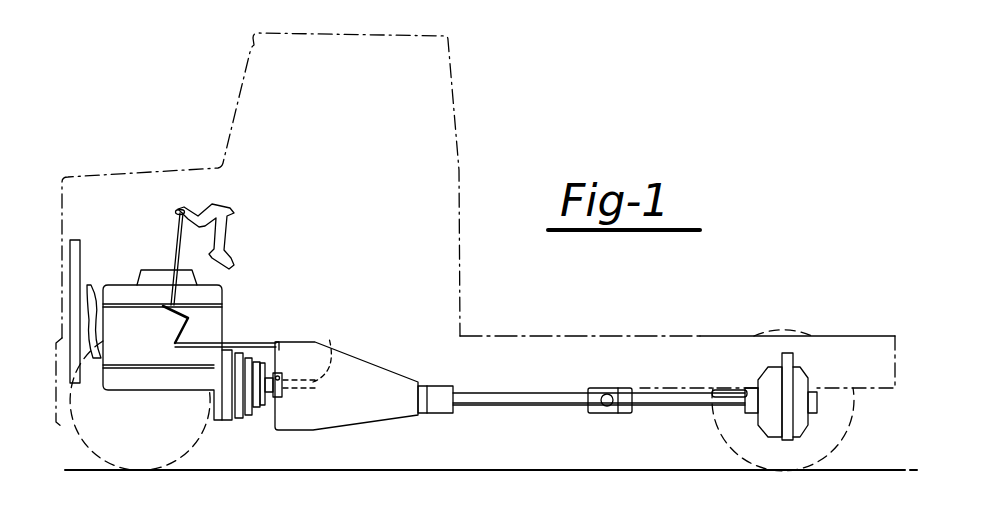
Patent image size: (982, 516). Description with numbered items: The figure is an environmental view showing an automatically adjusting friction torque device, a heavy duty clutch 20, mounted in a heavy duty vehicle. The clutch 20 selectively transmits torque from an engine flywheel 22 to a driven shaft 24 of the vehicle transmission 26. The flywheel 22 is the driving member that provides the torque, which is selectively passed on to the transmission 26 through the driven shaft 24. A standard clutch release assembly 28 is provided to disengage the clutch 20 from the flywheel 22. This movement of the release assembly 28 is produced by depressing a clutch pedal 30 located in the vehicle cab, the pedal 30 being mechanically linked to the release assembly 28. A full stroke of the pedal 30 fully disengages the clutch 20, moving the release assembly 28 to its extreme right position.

The heavy duty clutch 20 is at (244, 424).
The engine flywheel 22 is at (228, 342).
The driven shaft 24 is at (330, 342).
The vehicle transmission 26 is at (364, 387).
The clutch release assembly 28 is at (281, 380).
The clutch pedal 30 is at (235, 256).